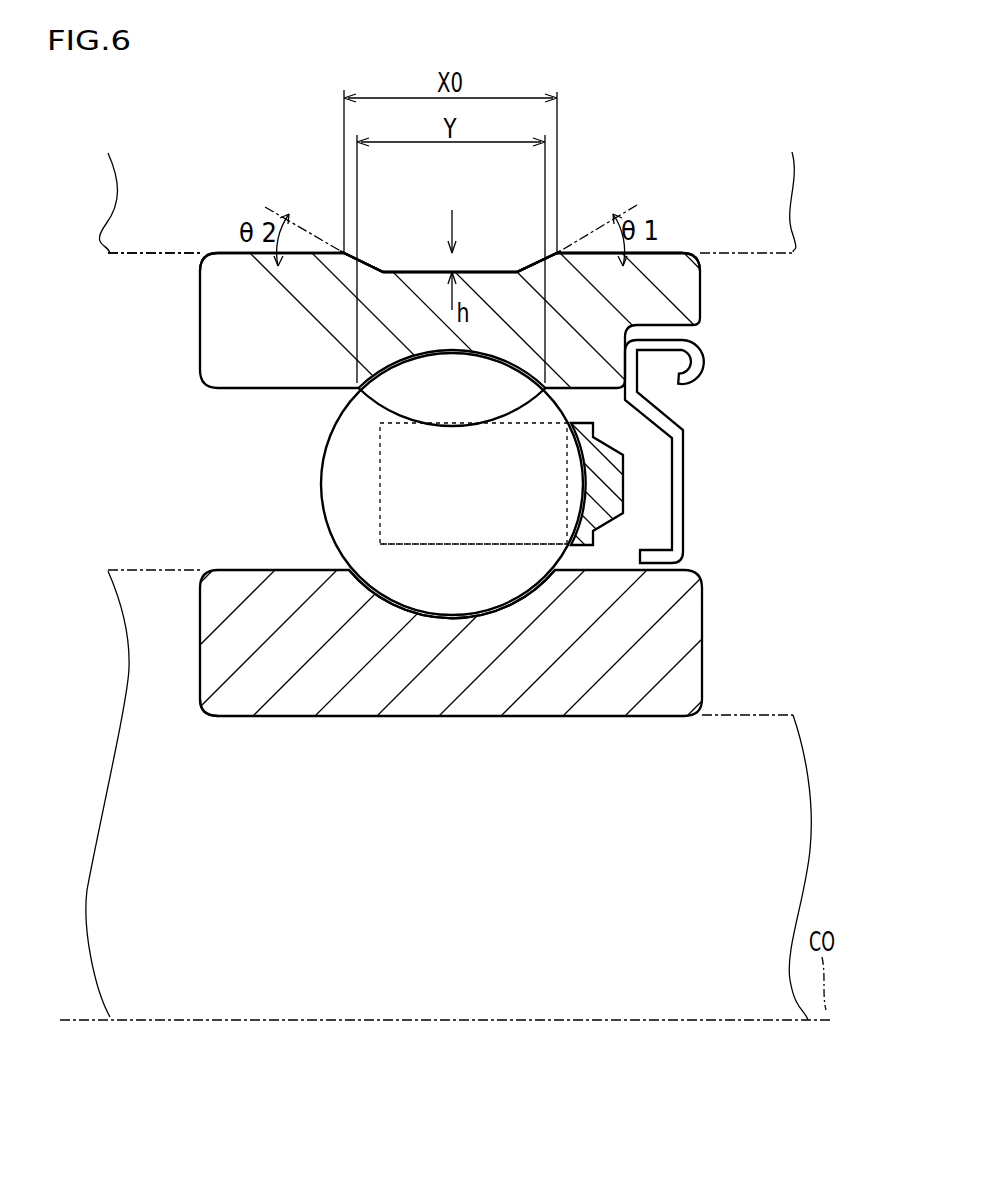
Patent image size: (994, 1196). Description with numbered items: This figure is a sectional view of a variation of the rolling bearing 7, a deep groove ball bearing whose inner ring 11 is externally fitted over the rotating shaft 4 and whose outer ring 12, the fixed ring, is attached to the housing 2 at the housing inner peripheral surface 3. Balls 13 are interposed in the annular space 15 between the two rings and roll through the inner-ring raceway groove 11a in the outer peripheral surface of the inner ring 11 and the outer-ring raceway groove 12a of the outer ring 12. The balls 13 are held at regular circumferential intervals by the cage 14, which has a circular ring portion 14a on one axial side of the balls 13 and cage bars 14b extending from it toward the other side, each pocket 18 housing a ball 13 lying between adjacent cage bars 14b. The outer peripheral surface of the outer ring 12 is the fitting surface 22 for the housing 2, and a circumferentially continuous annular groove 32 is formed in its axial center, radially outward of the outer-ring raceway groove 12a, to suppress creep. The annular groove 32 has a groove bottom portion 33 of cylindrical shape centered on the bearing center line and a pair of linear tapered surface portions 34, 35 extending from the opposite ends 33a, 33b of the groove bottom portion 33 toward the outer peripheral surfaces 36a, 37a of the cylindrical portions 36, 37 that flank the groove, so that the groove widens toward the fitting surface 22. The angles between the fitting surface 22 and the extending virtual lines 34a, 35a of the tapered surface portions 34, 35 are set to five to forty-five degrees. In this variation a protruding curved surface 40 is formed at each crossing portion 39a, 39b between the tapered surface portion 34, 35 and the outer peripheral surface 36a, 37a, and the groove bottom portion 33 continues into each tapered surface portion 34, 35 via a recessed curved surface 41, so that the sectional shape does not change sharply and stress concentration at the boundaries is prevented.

The housing 2 is at (158, 237).
The housing inner peripheral surface 3 is at (124, 255).
The rotating shaft 4 is at (750, 716).
The rolling bearing 7 is at (216, 716).
The inner ring 11 is at (650, 653).
The inner-ring raceway groove 11a is at (413, 598).
The outer ring 12 is at (690, 312).
The outer-ring raceway groove 12a is at (432, 362).
The ball 13 is at (502, 578).
The cage 14 is at (625, 463).
The circular ring portion 14a is at (605, 508).
The cage bar 14b is at (472, 544).
The annular space 15 is at (237, 490).
The pocket 18 is at (402, 545).
The fitting surface 22 is at (673, 252).
The annular groove 32 is at (484, 271).
The groove bottom portion 33 is at (468, 272).
The end of groove bottom portion 33a is at (398, 340).
The end of groove bottom portion 33b is at (520, 318).
The tapered surface portion 34 is at (377, 270).
The extending virtual line 34a is at (279, 208).
The tapered surface portion 35 is at (533, 270).
The extending virtual line 35a is at (623, 210).
The cylindrical portion 36 is at (236, 256).
The outer peripheral surface 36a is at (243, 253).
The cylindrical portion 37 is at (653, 260).
The outer peripheral surface 37a is at (657, 257).
The crossing portion 39a is at (343, 252).
The crossing portion 39b is at (558, 252).
The curved surface 40 is at (450, 132).
The recessed curved surface 41 is at (451, 411).